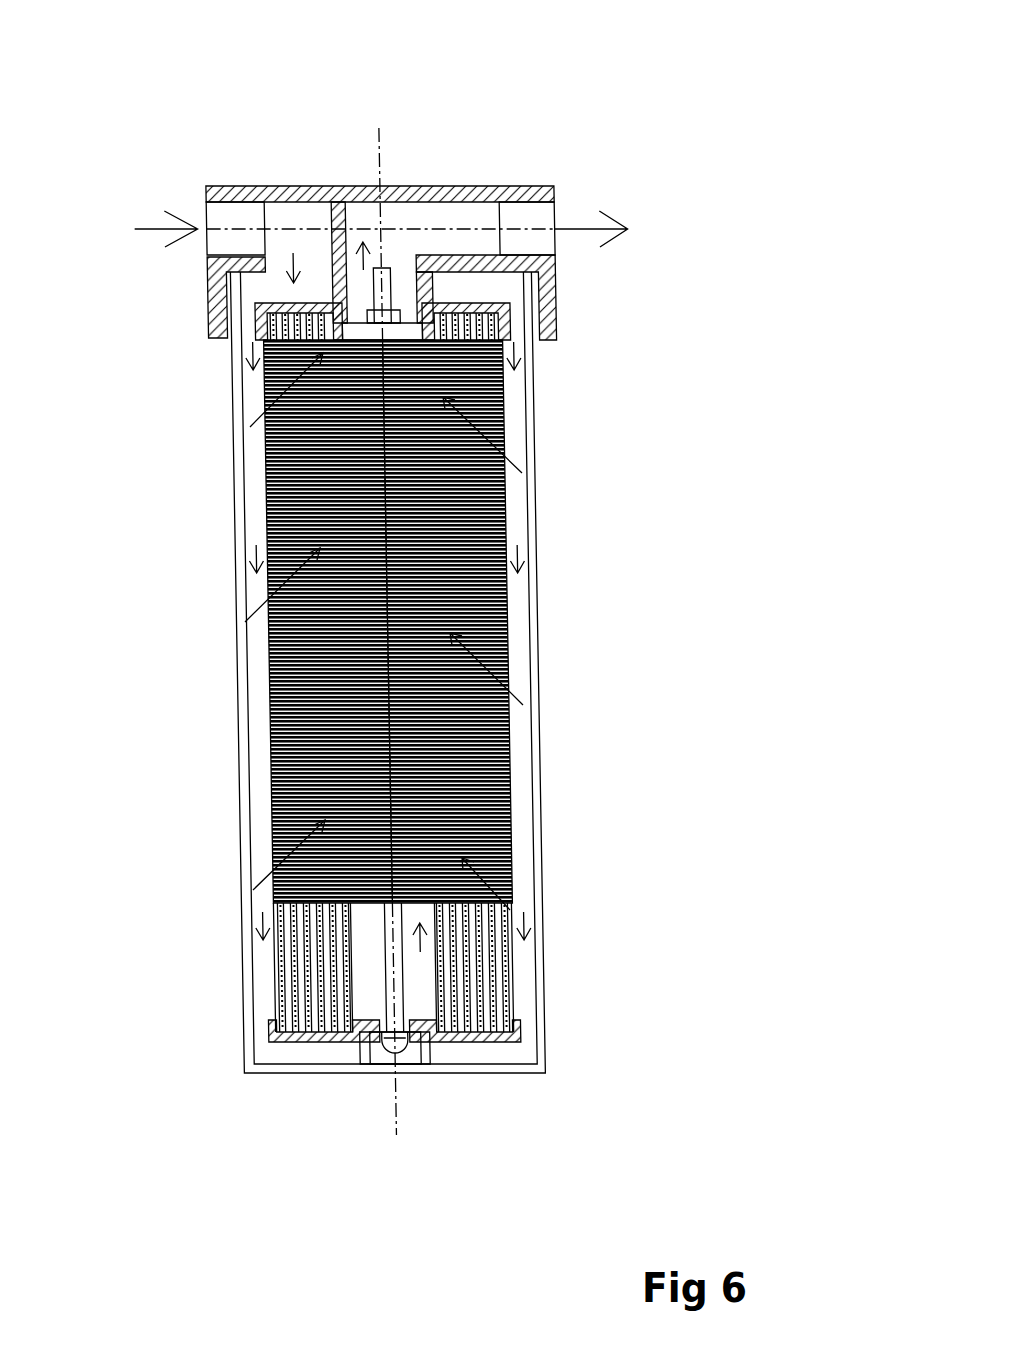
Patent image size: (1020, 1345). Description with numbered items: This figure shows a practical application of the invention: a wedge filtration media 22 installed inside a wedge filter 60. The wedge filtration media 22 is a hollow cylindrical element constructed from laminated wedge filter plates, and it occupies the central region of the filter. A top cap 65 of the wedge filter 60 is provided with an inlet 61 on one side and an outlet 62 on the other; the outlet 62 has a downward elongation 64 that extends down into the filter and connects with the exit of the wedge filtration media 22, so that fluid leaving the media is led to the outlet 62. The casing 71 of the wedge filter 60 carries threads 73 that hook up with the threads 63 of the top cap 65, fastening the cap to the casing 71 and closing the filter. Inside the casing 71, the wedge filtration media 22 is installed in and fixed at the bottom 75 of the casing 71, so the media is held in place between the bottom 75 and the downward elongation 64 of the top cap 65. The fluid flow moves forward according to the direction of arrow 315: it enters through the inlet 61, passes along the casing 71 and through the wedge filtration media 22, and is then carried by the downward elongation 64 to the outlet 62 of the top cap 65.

The wedge filter 60 is at (383, 64).
The top cap 65 is at (220, 186).
The inlet 61 is at (202, 237).
The outlet 62 is at (560, 220).
The threads of the top cap 63 is at (540, 290).
The downward elongation 64 is at (333, 262).
The threads of the casing 73 is at (535, 343).
The casing 71 is at (532, 588).
The wedge filtration media 22 is at (272, 512).
The arrow 315 is at (523, 703).
The bottom of the casing 75 is at (467, 1075).